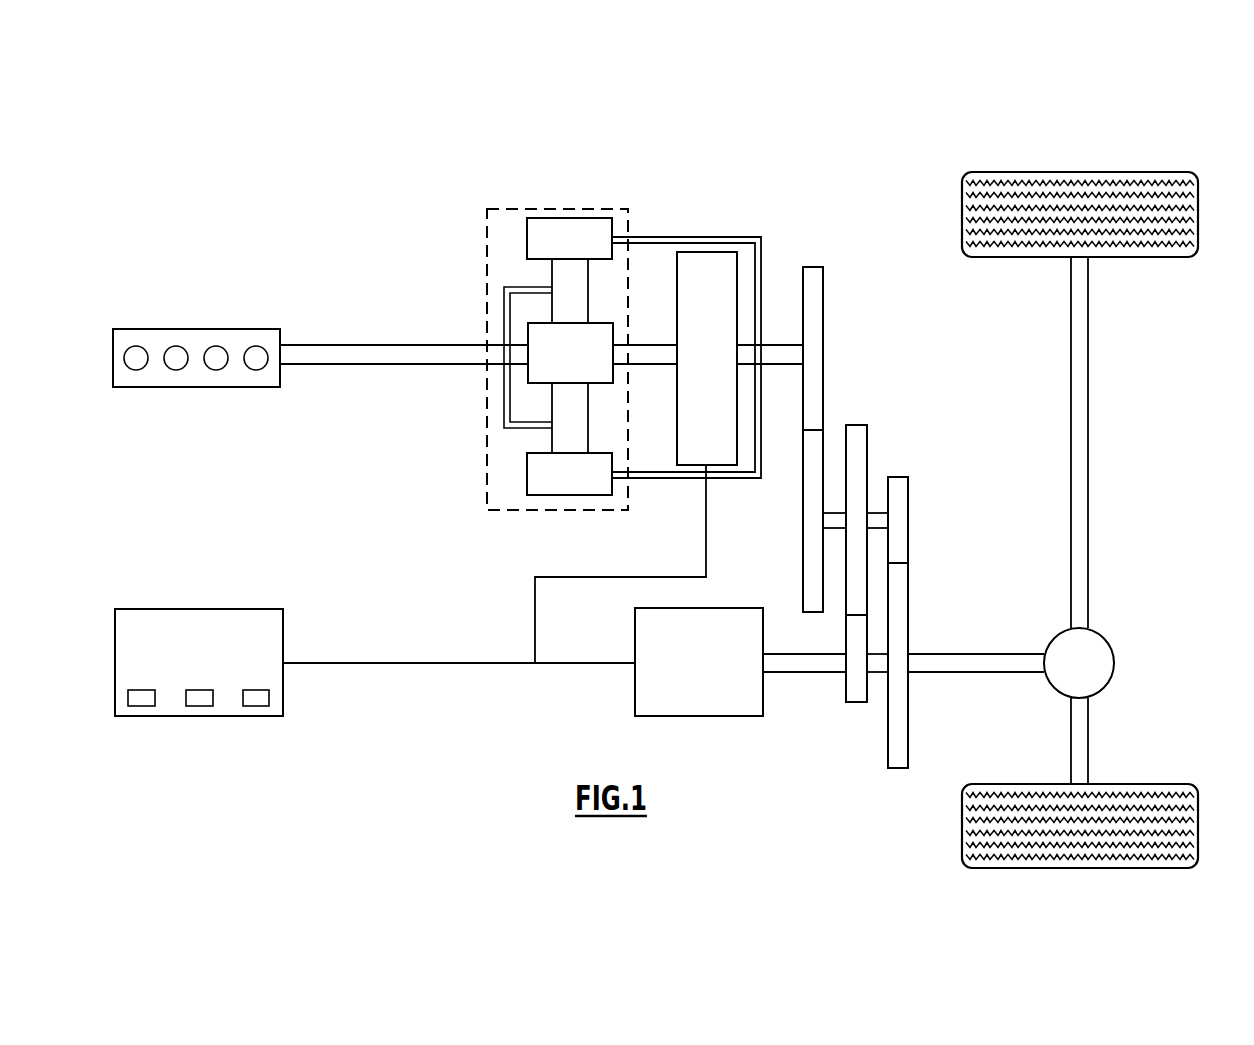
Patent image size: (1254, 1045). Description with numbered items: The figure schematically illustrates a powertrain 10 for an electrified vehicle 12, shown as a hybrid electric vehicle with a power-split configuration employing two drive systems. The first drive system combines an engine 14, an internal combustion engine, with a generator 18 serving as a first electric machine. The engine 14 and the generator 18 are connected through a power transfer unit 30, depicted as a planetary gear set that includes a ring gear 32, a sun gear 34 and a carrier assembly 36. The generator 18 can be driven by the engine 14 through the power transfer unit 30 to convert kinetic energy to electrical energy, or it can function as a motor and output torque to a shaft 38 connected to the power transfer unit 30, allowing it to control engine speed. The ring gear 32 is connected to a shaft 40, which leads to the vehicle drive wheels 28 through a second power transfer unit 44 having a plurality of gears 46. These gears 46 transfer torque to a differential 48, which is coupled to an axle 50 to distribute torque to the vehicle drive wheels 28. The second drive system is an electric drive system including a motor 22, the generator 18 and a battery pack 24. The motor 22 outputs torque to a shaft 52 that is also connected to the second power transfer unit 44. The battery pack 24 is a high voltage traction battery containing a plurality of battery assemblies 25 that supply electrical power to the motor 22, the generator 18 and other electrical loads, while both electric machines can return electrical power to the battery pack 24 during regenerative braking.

The powertrain 10 is at (340, 238).
The electrified vehicle 12 is at (723, 170).
The engine 14 is at (130, 329).
The generator 18 is at (685, 252).
The motor 22 is at (763, 700).
The battery pack 24 is at (132, 609).
The battery assemblies 25 is at (155, 698).
The vehicle drive wheels 28 is at (1198, 826).
The power transfer unit 30 is at (484, 470).
The ring gear 32 is at (527, 238).
The sun gear 34 is at (528, 332).
The carrier assembly 36 is at (503, 413).
The shaft 38 is at (647, 345).
The shaft 40 is at (780, 345).
The second power transfer unit 44 is at (886, 394).
The gears 46 is at (823, 395).
The differential 48 is at (1110, 688).
The axle 50 is at (1088, 432).
The shaft 52 is at (813, 672).